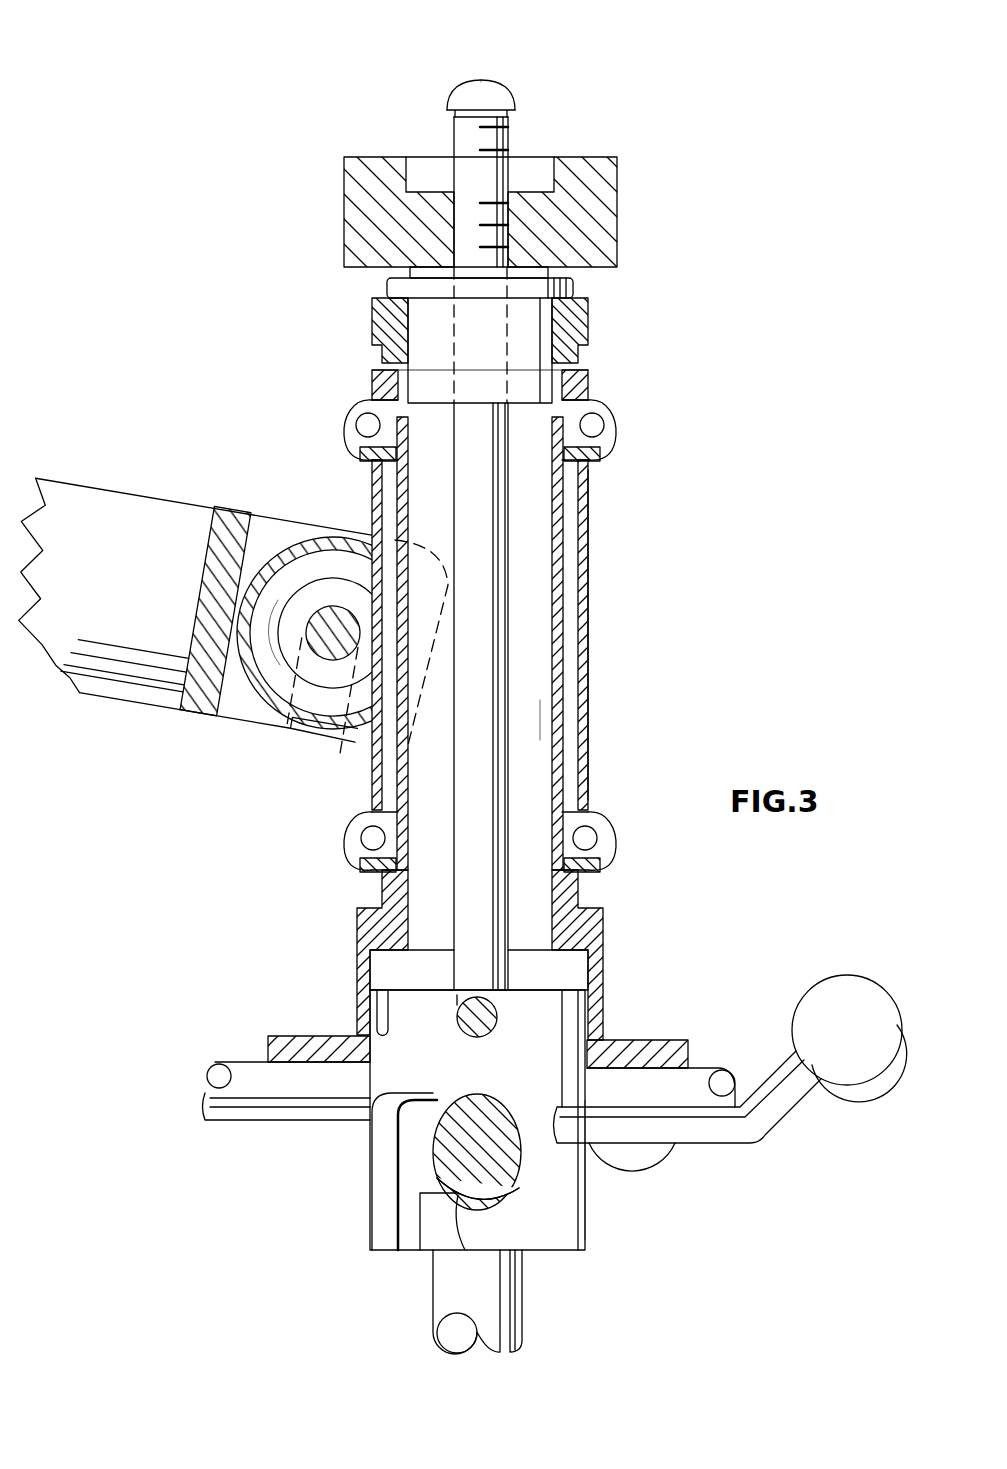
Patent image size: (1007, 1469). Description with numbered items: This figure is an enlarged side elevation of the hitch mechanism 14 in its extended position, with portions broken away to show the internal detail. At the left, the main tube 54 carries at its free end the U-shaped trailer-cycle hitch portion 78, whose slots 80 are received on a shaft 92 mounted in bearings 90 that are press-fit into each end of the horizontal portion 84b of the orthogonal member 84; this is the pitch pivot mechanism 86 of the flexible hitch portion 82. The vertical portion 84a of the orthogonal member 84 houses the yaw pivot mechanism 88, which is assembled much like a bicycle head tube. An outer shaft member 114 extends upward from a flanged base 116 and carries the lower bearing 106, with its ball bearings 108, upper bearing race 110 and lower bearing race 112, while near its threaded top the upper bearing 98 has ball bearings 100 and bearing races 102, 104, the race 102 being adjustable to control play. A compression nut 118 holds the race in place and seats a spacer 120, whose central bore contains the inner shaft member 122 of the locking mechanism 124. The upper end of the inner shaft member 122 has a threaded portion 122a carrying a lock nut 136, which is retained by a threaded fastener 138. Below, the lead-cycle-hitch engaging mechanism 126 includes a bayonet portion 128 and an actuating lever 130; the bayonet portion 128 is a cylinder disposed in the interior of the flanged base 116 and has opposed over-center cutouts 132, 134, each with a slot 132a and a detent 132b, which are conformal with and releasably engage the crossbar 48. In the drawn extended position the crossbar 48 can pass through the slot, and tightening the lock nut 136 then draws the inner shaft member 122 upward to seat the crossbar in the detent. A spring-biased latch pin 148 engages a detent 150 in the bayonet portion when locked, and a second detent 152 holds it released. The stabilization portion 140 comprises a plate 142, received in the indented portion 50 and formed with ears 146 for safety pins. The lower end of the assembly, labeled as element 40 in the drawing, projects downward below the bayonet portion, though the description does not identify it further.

The hitch mechanism 14 is at (672, 148).
The shaft 40 is at (522, 1300).
The crossbar 48 is at (455, 1215).
The indented portion 50 is at (697, 1070).
The main tube 54 is at (186, 606).
The trailer-cycle hitch portion 78 is at (215, 610).
The slots 80 is at (269, 720).
The flexible hitch portion 82 is at (614, 577).
The orthogonal member 84 is at (590, 660).
The vertical portion 84a is at (590, 605).
The horizontal portion 84b is at (317, 533).
The pitch pivot mechanism 86 is at (332, 632).
The yaw pivot mechanism 88 is at (568, 720).
The bearings 90 is at (273, 672).
The shaft 92 is at (323, 678).
The upper bearing 98 is at (531, 420).
The ball bearings 100 is at (606, 428).
The bearing race 102 is at (617, 445).
The bearing race 104 is at (596, 458).
The lower bearing 106 is at (526, 833).
The ball bearings 108 is at (598, 838).
The upper bearing race 110 is at (603, 862).
The lower bearing race 112 is at (583, 882).
The outer shaft member 114 is at (547, 720).
The flanged base 116 is at (603, 962).
The compression nut 118 is at (588, 310).
The spacer 120 is at (387, 283).
The inner shaft member 122 is at (507, 543).
The threaded portion 122a is at (512, 140).
The locking mechanism 124 is at (550, 88).
The lead-cycle-hitch engaging mechanism 126 is at (737, 1200).
The bayonet portion 128 is at (587, 1235).
The actuating lever 130 is at (798, 1110).
The over-center cutout 132 is at (377, 1222).
The slot 132a is at (408, 1240).
The detent 132b is at (497, 1197).
The over-center cutout 134 is at (490, 1167).
The lock nut 136 is at (617, 213).
The threaded fastener 138 is at (478, 80).
The stabilization portion 140 is at (695, 1042).
The plate 142 is at (268, 1036).
The ears 146 is at (650, 1170).
The latch pin 148 is at (492, 1032).
The detent 150 is at (457, 995).
The second detent 152 is at (373, 1008).